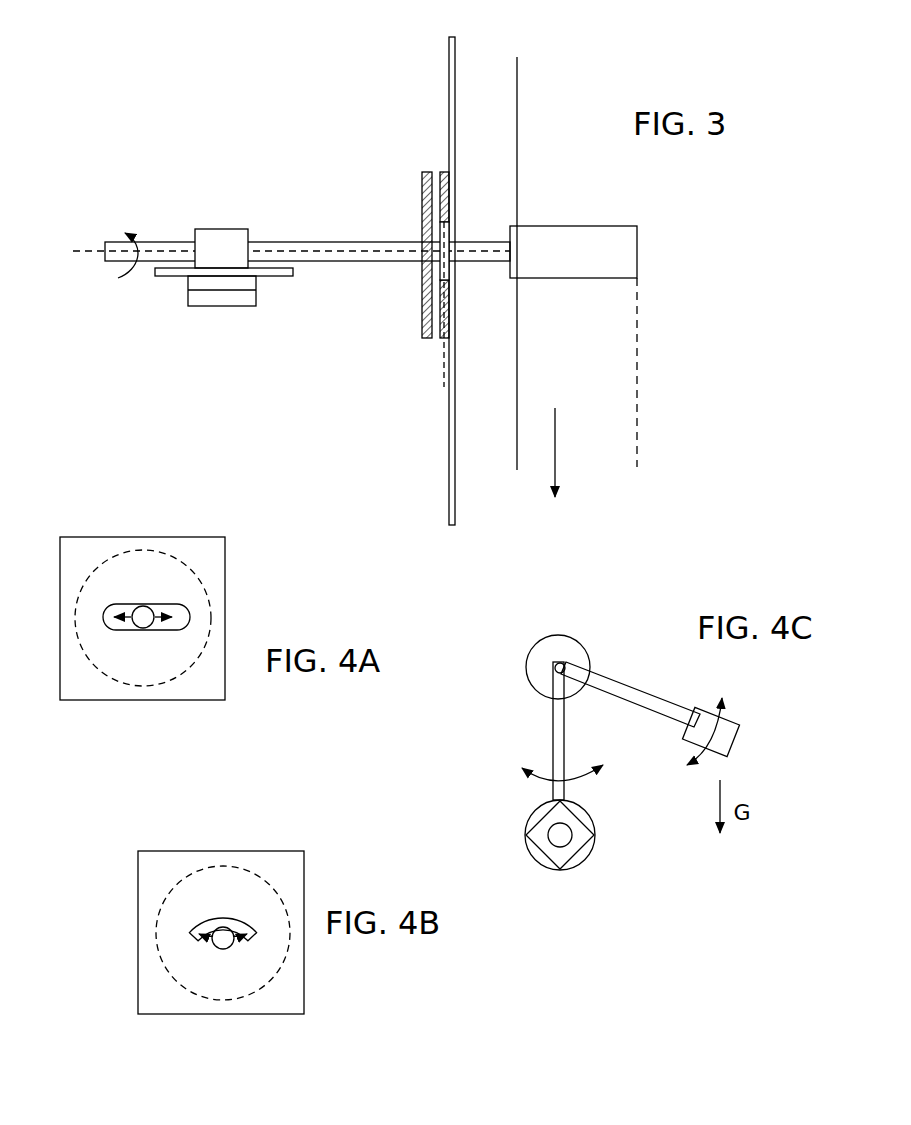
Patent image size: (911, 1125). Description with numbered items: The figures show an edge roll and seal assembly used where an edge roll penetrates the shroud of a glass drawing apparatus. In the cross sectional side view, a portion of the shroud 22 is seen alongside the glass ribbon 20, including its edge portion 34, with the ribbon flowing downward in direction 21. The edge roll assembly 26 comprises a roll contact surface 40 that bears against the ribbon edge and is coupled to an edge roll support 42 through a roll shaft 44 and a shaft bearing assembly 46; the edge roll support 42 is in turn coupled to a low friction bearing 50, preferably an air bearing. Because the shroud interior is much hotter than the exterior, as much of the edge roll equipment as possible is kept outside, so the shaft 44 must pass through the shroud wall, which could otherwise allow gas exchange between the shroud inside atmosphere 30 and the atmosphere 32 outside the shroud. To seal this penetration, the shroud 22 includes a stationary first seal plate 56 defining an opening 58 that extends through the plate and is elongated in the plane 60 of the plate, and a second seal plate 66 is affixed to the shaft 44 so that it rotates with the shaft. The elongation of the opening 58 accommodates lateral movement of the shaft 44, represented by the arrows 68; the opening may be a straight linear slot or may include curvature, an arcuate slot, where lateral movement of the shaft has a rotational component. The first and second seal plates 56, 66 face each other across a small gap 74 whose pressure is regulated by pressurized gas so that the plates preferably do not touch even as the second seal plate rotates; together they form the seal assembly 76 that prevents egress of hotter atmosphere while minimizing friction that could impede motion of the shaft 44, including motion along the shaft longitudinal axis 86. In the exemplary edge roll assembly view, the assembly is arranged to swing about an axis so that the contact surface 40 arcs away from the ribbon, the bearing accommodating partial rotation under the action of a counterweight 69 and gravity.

In FIG. 3, the glass ribbon 20 is at (514, 150).
In FIG. 3, the direction 21 is at (556, 450).
In FIG. 3, the shroud 22 is at (449, 63).
In FIG. 3, the edge roll assembly 26 is at (358, 232).
In FIG. 3, the shroud inside atmosphere 30 is at (474, 445).
In FIG. 3, the atmosphere outside the shroud 32 is at (336, 445).
In FIG. 3, the edge portion 34 is at (623, 387).
In FIG. 3, the roll contact surface 40 is at (530, 226).
In FIG. 4C, the roll contact surface 40 is at (590, 853).
In FIG. 3, the edge roll support 42 is at (282, 278).
In FIG. 4C, the edge roll support 42 is at (550, 727).
In FIG. 3, the roll shaft 44 is at (400, 263).
In FIG. 4A, the roll shaft 44 is at (143, 607).
In FIG. 4B, the roll shaft 44 is at (230, 952).
In FIG. 4C, the roll shaft 44 is at (560, 837).
In FIG. 3, the shaft bearing assembly 46 is at (215, 229).
In FIG. 4C, the shaft bearing assembly 46 is at (543, 827).
In FIG. 3, the bearing 50 is at (184, 285).
In FIG. 4C, the bearing 50 is at (575, 635).
In FIG. 3, the first seal plate 56 is at (445, 172).
In FIG. 4A, the first seal plate 56 is at (115, 537).
In FIG. 4B, the first seal plate 56 is at (193, 851).
In FIG. 3, the opening 58 is at (448, 272).
In FIG. 4A, the opening 58 is at (124, 632).
In FIG. 4B, the opening 58 is at (205, 950).
In FIG. 3, the plane 60 is at (443, 365).
In FIG. 3, the second seal plate 66 is at (422, 195).
In FIG. 4A, the second seal plate 66 is at (75, 618).
In FIG. 4B, the second seal plate 66 is at (153, 933).
In FIG. 4A, the arrows 68 is at (128, 607).
In FIG. 4B, the arrows 68 is at (233, 930).
In FIG. 4C, the counterweight 69 is at (738, 748).
In FIG. 3, the gap 74 is at (436, 335).
In FIG. 3, the seal assembly 76 is at (410, 328).
In FIG. 4A, the seal assembly 76 is at (113, 715).
In FIG. 4B, the seal assembly 76 is at (190, 1030).
In FIG. 3, the shaft longitudinal axis 86 is at (85, 252).